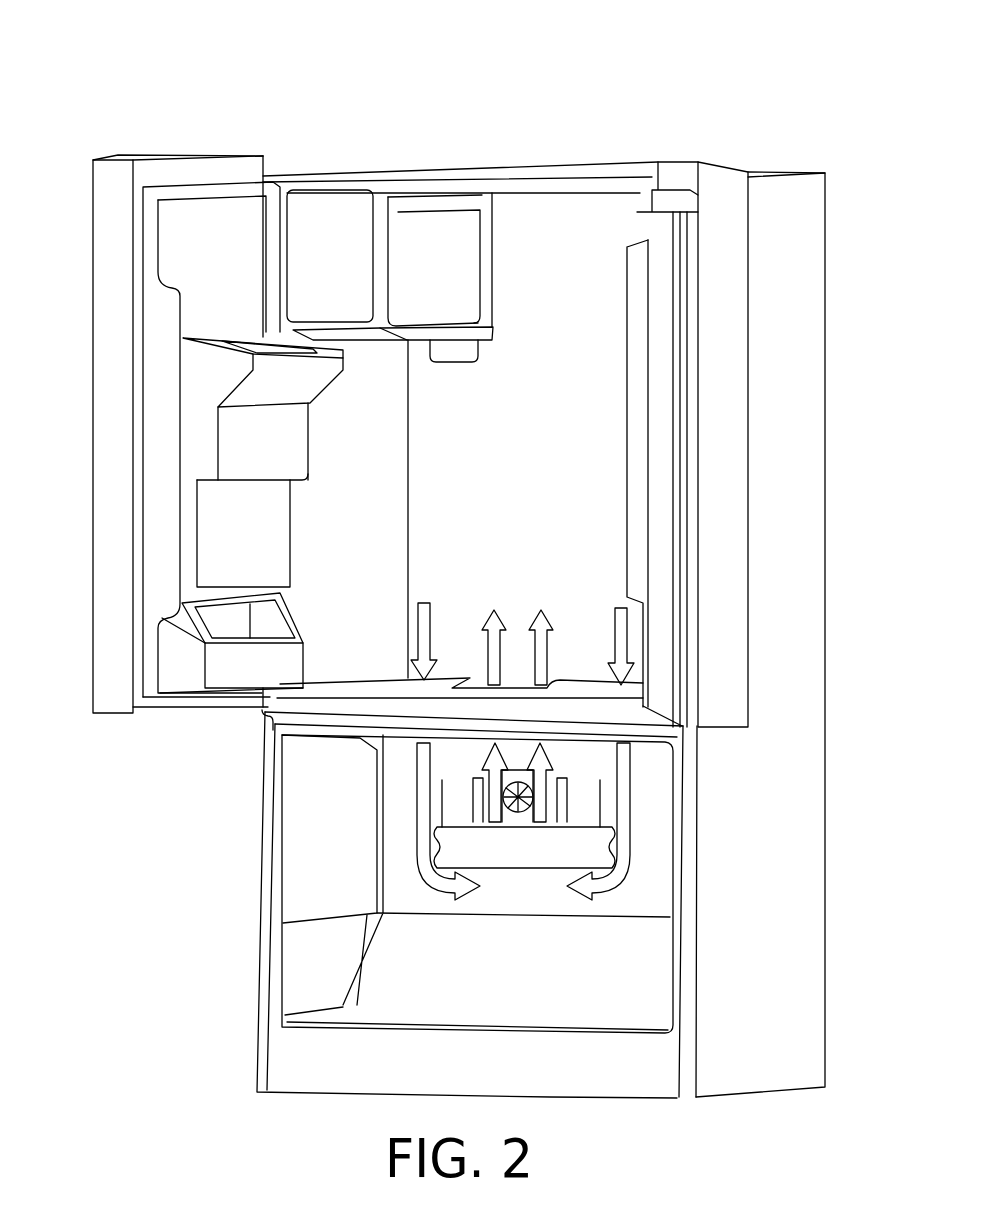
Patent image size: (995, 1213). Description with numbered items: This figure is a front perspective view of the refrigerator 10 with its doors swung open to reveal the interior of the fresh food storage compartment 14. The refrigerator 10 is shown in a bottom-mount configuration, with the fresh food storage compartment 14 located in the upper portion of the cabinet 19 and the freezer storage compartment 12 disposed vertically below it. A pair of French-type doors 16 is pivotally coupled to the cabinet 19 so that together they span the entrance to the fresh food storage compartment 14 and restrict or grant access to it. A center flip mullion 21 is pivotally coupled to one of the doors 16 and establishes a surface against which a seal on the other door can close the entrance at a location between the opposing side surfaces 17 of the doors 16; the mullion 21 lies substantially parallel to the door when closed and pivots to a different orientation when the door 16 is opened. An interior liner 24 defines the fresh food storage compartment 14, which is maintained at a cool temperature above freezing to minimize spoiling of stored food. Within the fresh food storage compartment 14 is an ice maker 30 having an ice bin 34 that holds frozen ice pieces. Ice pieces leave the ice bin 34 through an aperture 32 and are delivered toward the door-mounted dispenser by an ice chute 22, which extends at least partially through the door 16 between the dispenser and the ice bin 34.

The refrigerator 10 is at (784, 92).
The freezer storage compartment 12 is at (537, 979).
The fresh food storage compartment 14 is at (560, 432).
The door 16 is at (82, 276).
The side surface 17 is at (105, 342).
The cabinet 19 is at (816, 322).
The center flip mullion 21 is at (627, 497).
The ice chute 22 is at (253, 343).
The interior liner 24 is at (586, 214).
The ice maker 30 is at (458, 291).
The aperture 32 is at (350, 347).
The ice bin 34 is at (352, 301).